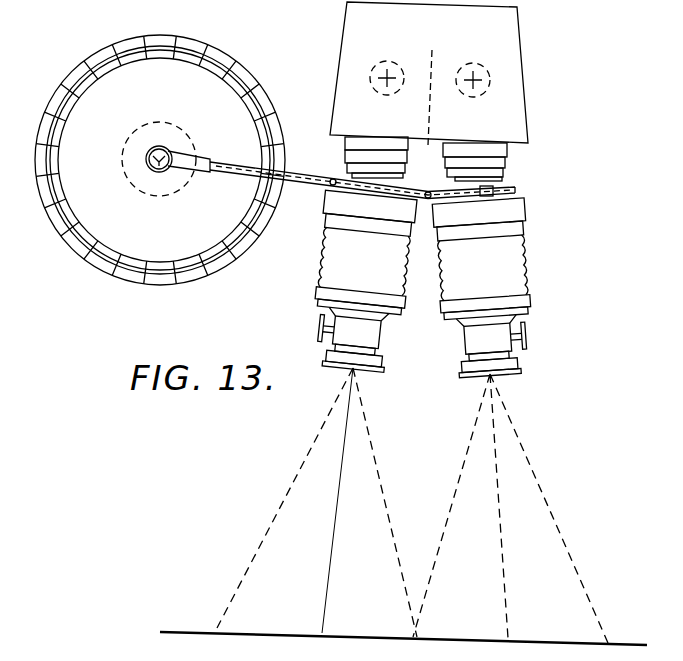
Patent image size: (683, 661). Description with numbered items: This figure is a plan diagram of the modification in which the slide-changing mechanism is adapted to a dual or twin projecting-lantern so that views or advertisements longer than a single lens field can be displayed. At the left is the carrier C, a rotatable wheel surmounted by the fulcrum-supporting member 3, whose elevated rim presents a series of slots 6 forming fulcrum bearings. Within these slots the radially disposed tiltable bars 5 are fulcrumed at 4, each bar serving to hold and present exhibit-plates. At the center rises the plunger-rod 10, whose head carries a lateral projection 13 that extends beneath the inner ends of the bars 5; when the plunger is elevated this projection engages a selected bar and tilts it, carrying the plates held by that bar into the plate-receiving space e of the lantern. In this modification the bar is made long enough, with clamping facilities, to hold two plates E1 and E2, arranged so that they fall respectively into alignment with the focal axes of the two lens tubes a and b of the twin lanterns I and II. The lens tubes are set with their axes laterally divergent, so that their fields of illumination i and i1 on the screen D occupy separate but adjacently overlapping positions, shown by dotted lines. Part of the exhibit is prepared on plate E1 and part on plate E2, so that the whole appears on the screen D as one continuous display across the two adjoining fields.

The fulcrum-supporting member 3 is at (131, 264).
The slots 6 is at (80, 229).
The carrier C is at (147, 170).
The plunger-rod 10 is at (150, 153).
The lateral projection 13 is at (193, 163).
The fulcrum 4 is at (274, 180).
The tiltable bars 5 is at (289, 178).
The plate-receiving space e is at (513, 196).
The exhibit-plate E1 is at (334, 181).
The exhibit-plate E2 is at (515, 189).
The projecting-lantern I is at (343, 281).
The projecting-lantern II is at (496, 288).
The lens tube a is at (377, 343).
The lens tube b is at (472, 343).
The field of illumination i is at (317, 502).
The field of illumination i1 is at (510, 508).
The screen D is at (197, 627).